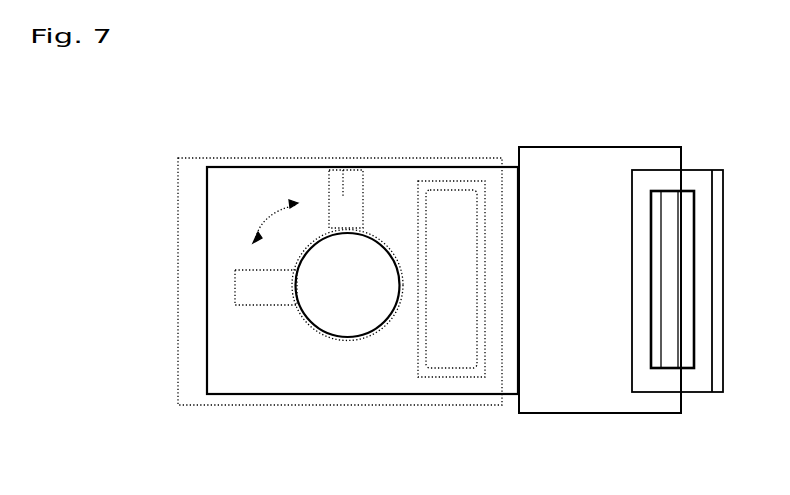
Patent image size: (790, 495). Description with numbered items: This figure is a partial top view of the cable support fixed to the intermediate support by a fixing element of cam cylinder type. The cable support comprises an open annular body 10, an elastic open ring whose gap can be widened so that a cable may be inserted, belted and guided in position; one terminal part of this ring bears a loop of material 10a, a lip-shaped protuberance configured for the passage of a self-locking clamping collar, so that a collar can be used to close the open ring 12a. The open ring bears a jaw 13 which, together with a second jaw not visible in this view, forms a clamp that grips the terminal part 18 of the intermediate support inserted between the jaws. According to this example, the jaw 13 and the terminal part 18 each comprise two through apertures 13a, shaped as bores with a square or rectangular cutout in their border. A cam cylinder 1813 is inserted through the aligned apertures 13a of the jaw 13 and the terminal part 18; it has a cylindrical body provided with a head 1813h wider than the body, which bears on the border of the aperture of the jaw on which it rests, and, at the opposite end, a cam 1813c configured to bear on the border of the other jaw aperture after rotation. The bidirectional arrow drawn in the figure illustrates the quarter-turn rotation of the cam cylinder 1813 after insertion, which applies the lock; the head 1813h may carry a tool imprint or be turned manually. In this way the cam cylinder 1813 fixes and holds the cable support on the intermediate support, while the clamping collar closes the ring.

The terminal part 18 is at (178, 211).
The jaw 13 is at (247, 185).
The aperture 13a is at (460, 197).
The open annular body 10 is at (600, 190).
The loop of material 10a is at (683, 182).
The open ring 12a is at (677, 320).
The cam cylinder 1813 is at (387, 250).
The cam 1813c is at (342, 174).
The head 1813h is at (332, 313).